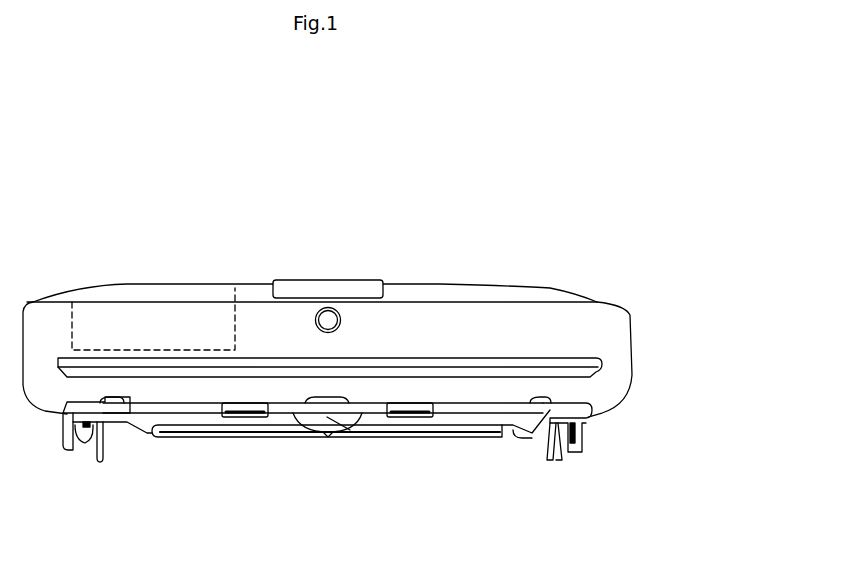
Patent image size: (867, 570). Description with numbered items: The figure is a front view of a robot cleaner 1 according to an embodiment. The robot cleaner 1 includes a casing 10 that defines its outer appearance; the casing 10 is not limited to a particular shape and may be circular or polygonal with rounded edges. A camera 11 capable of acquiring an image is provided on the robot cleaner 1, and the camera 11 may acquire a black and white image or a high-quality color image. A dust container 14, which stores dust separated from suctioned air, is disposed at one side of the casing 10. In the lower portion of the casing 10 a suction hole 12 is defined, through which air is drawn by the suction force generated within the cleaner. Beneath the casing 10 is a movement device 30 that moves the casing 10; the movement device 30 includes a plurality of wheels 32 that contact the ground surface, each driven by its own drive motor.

The robot cleaner 1 is at (403, 218).
The casing 10 is at (548, 287).
The camera 11 is at (328, 307).
The suction hole 12 is at (499, 438).
The dust container 14 is at (236, 313).
The movement device 30 is at (82, 458).
The wheels 32 is at (73, 455).